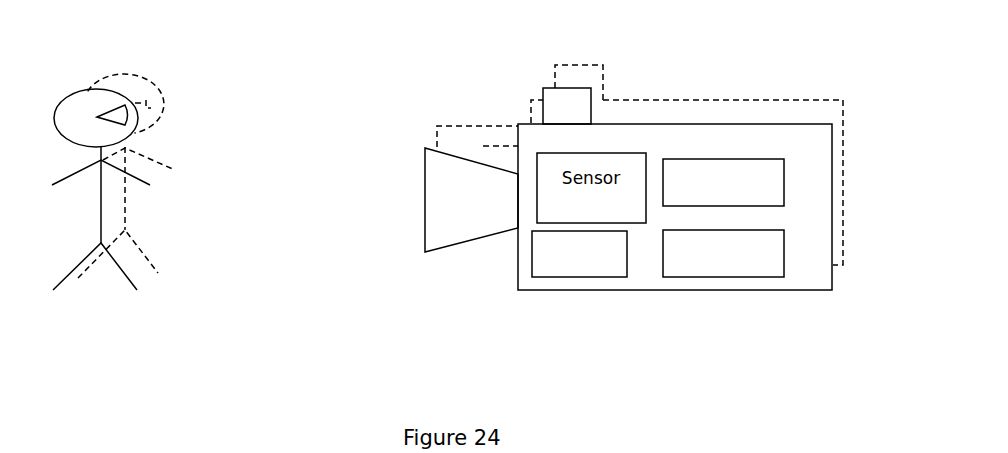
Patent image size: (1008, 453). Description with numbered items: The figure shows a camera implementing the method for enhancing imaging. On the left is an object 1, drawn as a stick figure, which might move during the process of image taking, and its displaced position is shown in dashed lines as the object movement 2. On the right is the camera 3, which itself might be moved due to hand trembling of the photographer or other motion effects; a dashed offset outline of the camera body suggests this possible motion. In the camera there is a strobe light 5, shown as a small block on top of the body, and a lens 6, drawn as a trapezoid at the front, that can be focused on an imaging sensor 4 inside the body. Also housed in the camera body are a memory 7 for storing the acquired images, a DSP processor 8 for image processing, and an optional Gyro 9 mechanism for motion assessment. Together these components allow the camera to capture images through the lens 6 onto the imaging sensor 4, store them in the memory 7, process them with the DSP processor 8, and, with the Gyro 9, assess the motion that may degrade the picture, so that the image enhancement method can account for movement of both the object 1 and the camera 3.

The object 1 is at (72, 300).
The object movement during image taking 2 is at (159, 250).
The camera 3 is at (497, 262).
The imaging sensor 4 is at (538, 136).
The strobe light 5 is at (592, 81).
The lens 6 is at (452, 195).
The memory 7 is at (743, 136).
The DSP processor 8 is at (746, 289).
The Gyro mechanism 9 is at (570, 291).